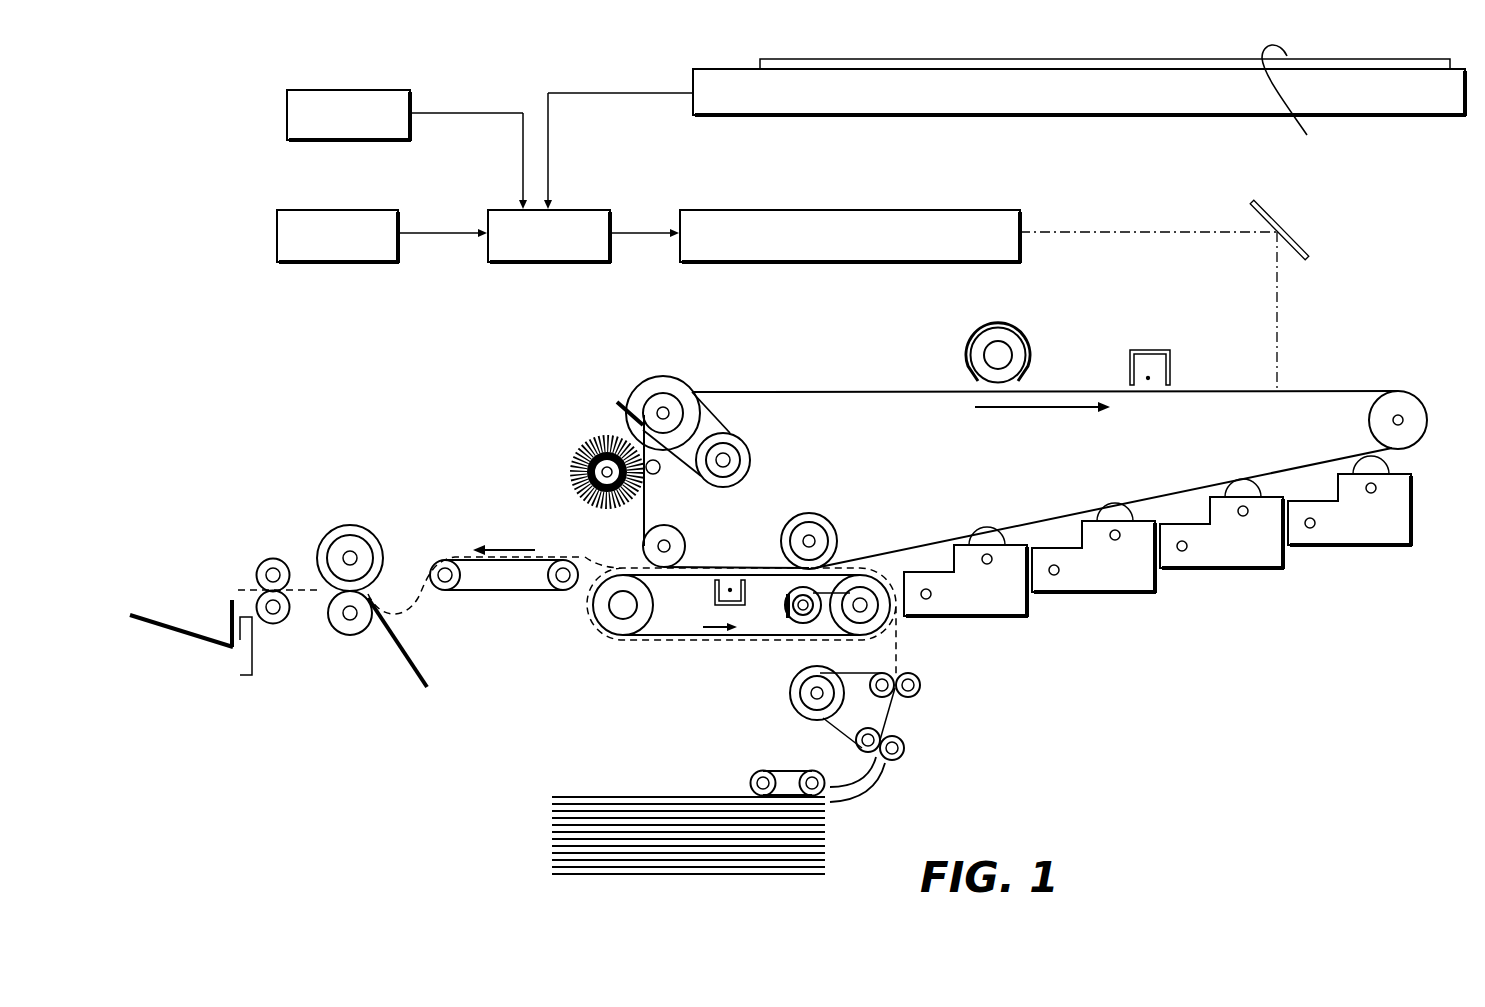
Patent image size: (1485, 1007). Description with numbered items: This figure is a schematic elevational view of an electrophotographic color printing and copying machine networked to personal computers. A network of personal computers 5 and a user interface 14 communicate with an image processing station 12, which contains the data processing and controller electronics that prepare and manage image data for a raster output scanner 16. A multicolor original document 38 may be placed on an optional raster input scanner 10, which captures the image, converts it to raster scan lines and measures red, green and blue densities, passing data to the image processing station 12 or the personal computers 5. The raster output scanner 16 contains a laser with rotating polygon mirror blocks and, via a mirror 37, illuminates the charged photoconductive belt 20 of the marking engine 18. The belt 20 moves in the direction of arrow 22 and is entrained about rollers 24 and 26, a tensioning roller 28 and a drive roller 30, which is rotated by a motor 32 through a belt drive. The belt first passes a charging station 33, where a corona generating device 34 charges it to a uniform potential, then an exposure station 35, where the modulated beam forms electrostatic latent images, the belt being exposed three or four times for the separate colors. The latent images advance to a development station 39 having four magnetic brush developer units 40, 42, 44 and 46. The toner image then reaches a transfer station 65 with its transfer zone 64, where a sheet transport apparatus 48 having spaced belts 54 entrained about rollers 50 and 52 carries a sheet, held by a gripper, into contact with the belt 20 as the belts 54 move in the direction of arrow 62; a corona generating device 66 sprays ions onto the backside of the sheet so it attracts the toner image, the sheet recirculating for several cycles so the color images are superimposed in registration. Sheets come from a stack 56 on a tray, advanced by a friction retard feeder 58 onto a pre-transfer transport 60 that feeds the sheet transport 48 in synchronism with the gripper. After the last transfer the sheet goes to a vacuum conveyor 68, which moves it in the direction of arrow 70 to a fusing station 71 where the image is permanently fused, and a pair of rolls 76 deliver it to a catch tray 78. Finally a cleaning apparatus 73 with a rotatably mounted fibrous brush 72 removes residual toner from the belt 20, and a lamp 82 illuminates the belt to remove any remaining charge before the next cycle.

The personal computers 5 is at (249, 104).
The raster input scanner 10 is at (664, 78).
The image processing station 12 is at (615, 190).
The user interface 14 is at (266, 190).
The raster output scanner 16 is at (899, 192).
The marking engine 18 is at (1445, 167).
The photoconductive belt 20 is at (1088, 390).
The arrow 22 is at (1042, 409).
The stripping roller 24 is at (683, 537).
The roller 26 is at (830, 530).
The tensioning roller 28 is at (1401, 402).
The drive roller 30 is at (642, 385).
The motor 32 is at (752, 455).
The charging station 33 is at (1192, 337).
The corona generating device 34 is at (1159, 350).
The exposure station 35 is at (1298, 371).
The mirror 37 is at (1310, 248).
The original document 38 is at (1291, 104).
The development station 39 is at (1196, 627).
The developer unit 40 is at (1369, 534).
The developer unit 42 is at (1238, 559).
The developer unit 44 is at (1108, 585).
The developer unit 46 is at (981, 609).
The sheet transport apparatus 48 is at (655, 667).
The roller 50 is at (620, 628).
The transfer belt roller 52 is at (865, 610).
The belts 54 is at (635, 567).
The stack of sheets 56 is at (575, 803).
The friction retard feeder 58 is at (790, 770).
The pre-transfer transport 60 is at (893, 717).
The arrow 62 is at (715, 632).
The transfer zone 64 is at (741, 547).
The transfer station 65 is at (759, 589).
The corona generating device 66 is at (712, 598).
The vacuum conveyor 68 is at (507, 593).
The arrow 70 is at (507, 548).
The fusing station 71 is at (342, 512).
The fibrous brush 72 is at (578, 452).
The photoreceptor cleaning apparatus 73 is at (580, 403).
The rolls 76 is at (277, 558).
The catch tray 78 is at (188, 637).
The lamp 82 is at (962, 352).